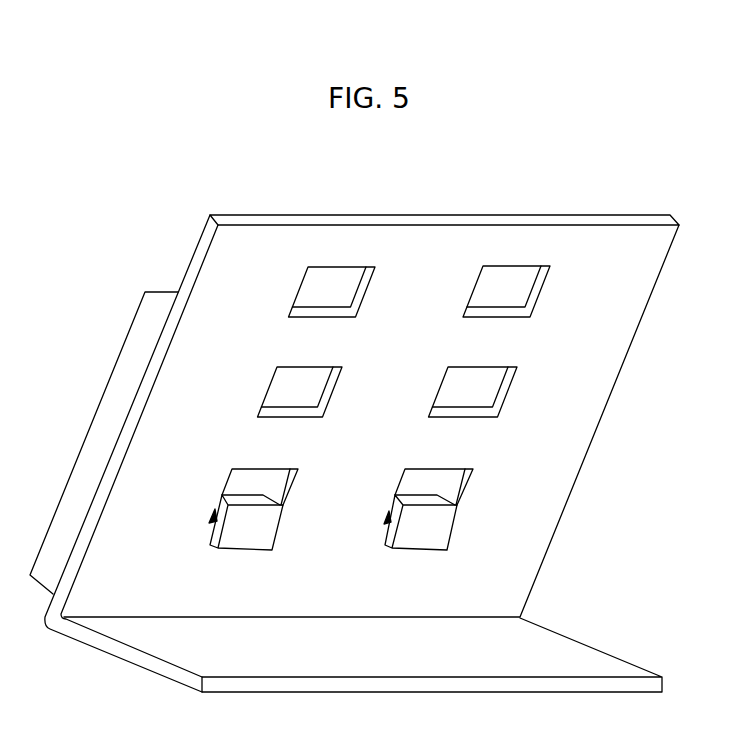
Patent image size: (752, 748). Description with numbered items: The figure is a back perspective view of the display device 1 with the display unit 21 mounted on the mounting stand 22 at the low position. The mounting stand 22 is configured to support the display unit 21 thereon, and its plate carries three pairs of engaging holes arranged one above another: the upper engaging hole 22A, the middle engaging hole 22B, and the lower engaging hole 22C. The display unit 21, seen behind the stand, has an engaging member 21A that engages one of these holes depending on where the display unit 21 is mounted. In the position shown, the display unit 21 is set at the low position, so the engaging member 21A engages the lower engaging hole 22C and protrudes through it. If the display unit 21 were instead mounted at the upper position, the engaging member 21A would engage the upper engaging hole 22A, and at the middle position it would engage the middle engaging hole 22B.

The display device 1 is at (541, 190).
The display unit 21 is at (168, 315).
The engaging member 21A is at (262, 530).
The mounting stand 22 is at (608, 663).
The upper engaging hole 22A is at (337, 290).
The middle engaging hole 22B is at (310, 378).
The lower engaging hole 22C is at (273, 482).